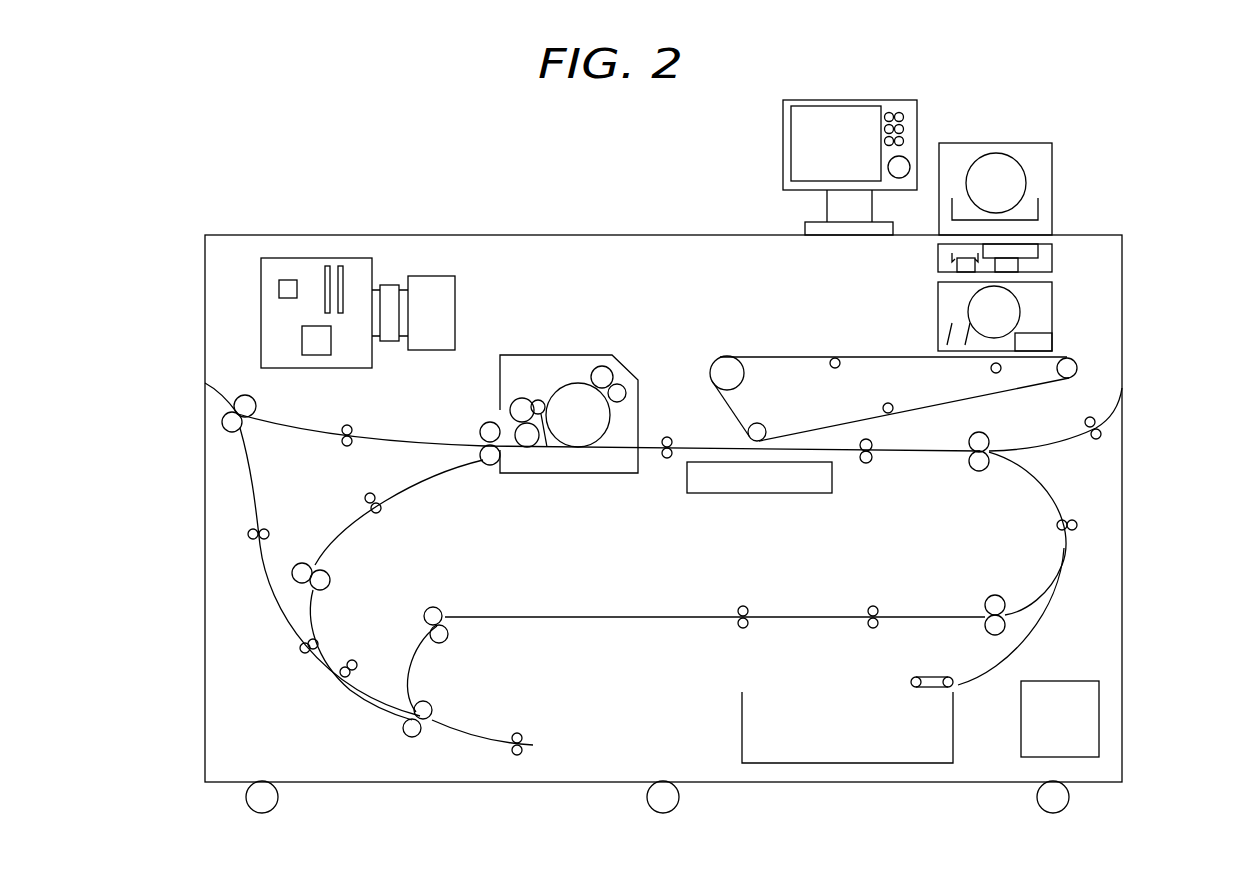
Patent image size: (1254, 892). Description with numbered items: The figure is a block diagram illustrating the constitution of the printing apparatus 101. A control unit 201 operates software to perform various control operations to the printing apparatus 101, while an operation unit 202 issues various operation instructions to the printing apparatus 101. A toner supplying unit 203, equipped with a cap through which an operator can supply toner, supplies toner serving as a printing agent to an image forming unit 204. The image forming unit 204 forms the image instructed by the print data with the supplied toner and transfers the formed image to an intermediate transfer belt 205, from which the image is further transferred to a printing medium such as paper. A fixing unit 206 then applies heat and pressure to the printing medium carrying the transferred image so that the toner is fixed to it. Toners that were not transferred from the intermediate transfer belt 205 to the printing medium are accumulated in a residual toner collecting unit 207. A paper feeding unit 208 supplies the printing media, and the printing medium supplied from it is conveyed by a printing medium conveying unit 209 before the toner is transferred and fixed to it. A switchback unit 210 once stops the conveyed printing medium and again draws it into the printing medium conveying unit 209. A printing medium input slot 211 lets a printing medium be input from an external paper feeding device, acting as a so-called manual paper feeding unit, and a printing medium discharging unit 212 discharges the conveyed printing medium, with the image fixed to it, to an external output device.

The printing apparatus 101 is at (570, 186).
The control unit 201 is at (335, 258).
The operation unit 202 is at (884, 100).
The toner supplying unit 203 is at (1028, 143).
The image forming unit 204 is at (1052, 301).
The intermediate transfer belt 205 is at (795, 357).
The fixing unit 206 is at (583, 355).
The residual toner collecting unit 207 is at (1080, 681).
The paper feeding unit 208 is at (742, 718).
The printing medium conveying unit 209 is at (655, 617).
The switchback unit 210 is at (443, 733).
The printing medium input slot 211 is at (1122, 385).
The printing medium discharging unit 212 is at (205, 383).